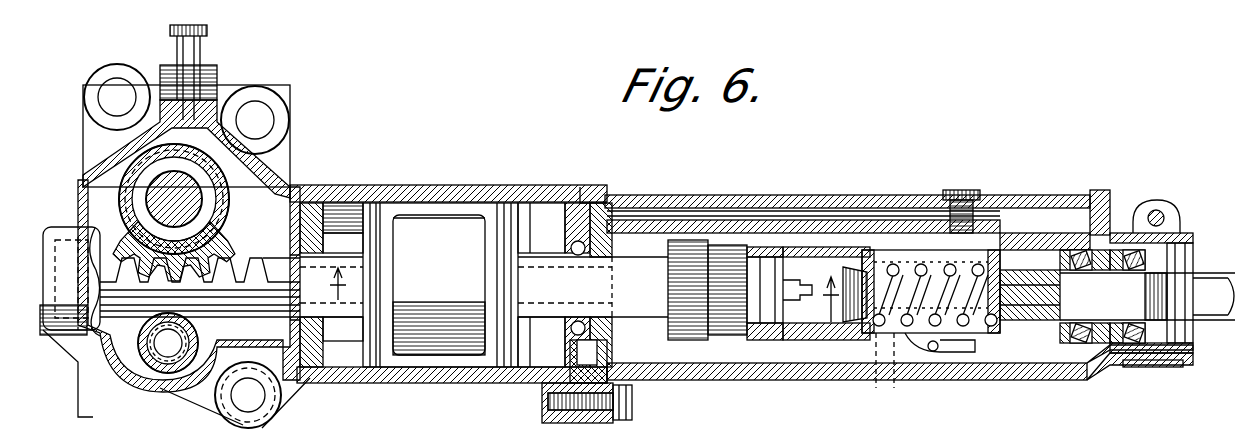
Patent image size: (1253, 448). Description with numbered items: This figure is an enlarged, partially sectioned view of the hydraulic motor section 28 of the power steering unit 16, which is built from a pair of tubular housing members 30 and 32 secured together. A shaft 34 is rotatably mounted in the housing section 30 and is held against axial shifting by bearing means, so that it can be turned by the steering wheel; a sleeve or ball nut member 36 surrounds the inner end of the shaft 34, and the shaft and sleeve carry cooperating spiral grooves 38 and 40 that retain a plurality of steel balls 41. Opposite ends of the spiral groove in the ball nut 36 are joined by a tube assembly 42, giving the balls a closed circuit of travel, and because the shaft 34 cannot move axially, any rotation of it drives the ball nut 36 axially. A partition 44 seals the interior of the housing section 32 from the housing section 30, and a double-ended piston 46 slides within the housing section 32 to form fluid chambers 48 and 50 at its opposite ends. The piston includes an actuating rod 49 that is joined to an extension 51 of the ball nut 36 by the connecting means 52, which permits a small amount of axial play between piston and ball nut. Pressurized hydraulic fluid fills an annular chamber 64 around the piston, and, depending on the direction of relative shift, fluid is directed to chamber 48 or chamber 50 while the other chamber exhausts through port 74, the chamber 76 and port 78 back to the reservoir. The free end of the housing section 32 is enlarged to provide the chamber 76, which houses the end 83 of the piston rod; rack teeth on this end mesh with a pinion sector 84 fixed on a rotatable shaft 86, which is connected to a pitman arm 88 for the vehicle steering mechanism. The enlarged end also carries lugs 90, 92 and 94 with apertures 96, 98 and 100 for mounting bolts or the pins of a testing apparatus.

The steering unit 16 is at (843, 178).
The hydraulic motor section 28 is at (585, 174).
The tubular housing member 30 is at (865, 200).
The tubular housing member 32 is at (507, 200).
The shaft 34 is at (1048, 273).
The sleeve or ball nut member 36 is at (980, 250).
The spiral groove 38 is at (1030, 273).
The spiral groove 40 is at (924, 232).
The steel balls 41 is at (888, 383).
The tube assembly 42 is at (967, 350).
The partition 44 is at (594, 215).
The double-ended piston 46 is at (356, 210).
The fluid chamber 48 is at (335, 355).
The actuating rod 49 is at (640, 313).
The fluid chamber 50 is at (542, 352).
The extension 51 is at (763, 247).
The connecting means 52 is at (708, 340).
The annular chamber 64 is at (455, 357).
The port 74 is at (280, 278).
The chamber 76 is at (300, 172).
The port 78 is at (192, 108).
The end of the piston rod 83 is at (145, 300).
The pinion sector 84 is at (157, 222).
The rotatable shaft 86 is at (150, 188).
The pitman arm 88 is at (80, 326).
The lug 90 is at (84, 130).
The lug 92 is at (242, 190).
The lug 94 is at (202, 397).
The aperture 96 is at (116, 90).
The aperture 98 is at (258, 110).
The aperture 100 is at (257, 403).